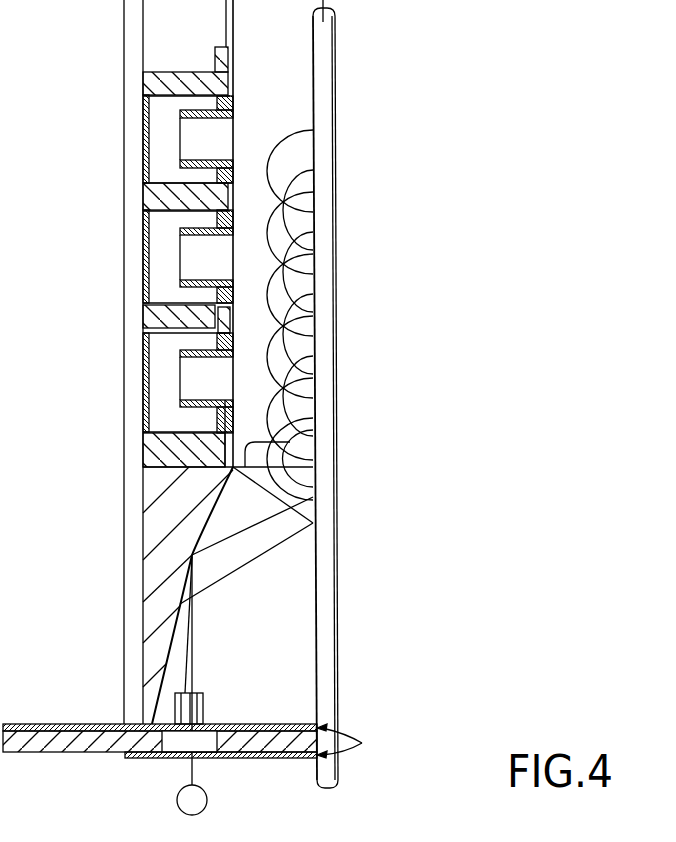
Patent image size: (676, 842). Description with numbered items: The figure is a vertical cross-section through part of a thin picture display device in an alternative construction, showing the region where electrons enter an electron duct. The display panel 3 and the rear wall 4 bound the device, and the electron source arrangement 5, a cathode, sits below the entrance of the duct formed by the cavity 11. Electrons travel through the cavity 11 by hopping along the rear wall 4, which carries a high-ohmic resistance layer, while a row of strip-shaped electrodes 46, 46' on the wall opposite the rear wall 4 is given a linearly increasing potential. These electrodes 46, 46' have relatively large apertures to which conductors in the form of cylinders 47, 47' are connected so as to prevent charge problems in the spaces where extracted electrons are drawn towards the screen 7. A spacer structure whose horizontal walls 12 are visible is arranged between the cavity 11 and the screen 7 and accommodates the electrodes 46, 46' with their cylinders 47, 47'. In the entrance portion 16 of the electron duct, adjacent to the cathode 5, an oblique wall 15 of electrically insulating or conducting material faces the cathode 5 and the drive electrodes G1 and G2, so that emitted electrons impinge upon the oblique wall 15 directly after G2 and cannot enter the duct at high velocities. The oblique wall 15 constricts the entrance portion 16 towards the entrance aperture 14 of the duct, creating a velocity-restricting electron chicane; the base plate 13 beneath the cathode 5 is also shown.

The display panel 3 is at (130, 440).
The rear wall 4 is at (323, 508).
The electron source arrangement 5 is at (207, 802).
The screen 7 is at (234, 256).
The cavity 11 is at (242, 133).
The horizontal wall 12 is at (160, 318).
The base plate 13 is at (52, 740).
The entrance aperture 14 is at (290, 442).
The oblique wall 15 is at (207, 521).
The entrance portion 16 is at (285, 653).
The electrode 46 is at (303, 383).
The electrode 46' is at (306, 256).
The cylinder 47 is at (111, 382).
The cylinder 47' is at (110, 256).
The drive electrode G1 is at (356, 743).
The drive electrode G2 is at (374, 750).